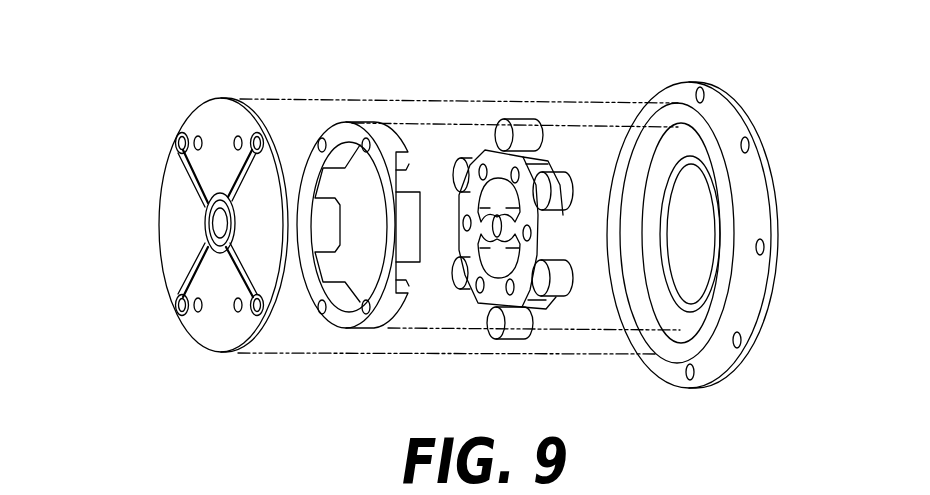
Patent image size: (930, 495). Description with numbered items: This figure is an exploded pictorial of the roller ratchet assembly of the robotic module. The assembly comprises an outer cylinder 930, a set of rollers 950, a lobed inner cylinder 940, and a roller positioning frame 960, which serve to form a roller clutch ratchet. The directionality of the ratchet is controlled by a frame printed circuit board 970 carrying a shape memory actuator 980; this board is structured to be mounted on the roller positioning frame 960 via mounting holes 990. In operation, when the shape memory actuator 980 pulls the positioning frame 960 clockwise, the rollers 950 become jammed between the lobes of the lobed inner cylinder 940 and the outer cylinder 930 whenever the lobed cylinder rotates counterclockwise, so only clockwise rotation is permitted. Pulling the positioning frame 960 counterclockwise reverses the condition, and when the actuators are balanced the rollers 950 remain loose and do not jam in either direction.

The outer cylinder 930 is at (688, 80).
The lobed inner cylinder 940 is at (485, 148).
The rollers 950 is at (518, 122).
The roller positioning frame 960 is at (373, 127).
The frame printed circuit board 970 is at (193, 118).
The shape memory actuator 980 is at (193, 192).
The mounting holes 990 is at (320, 140).